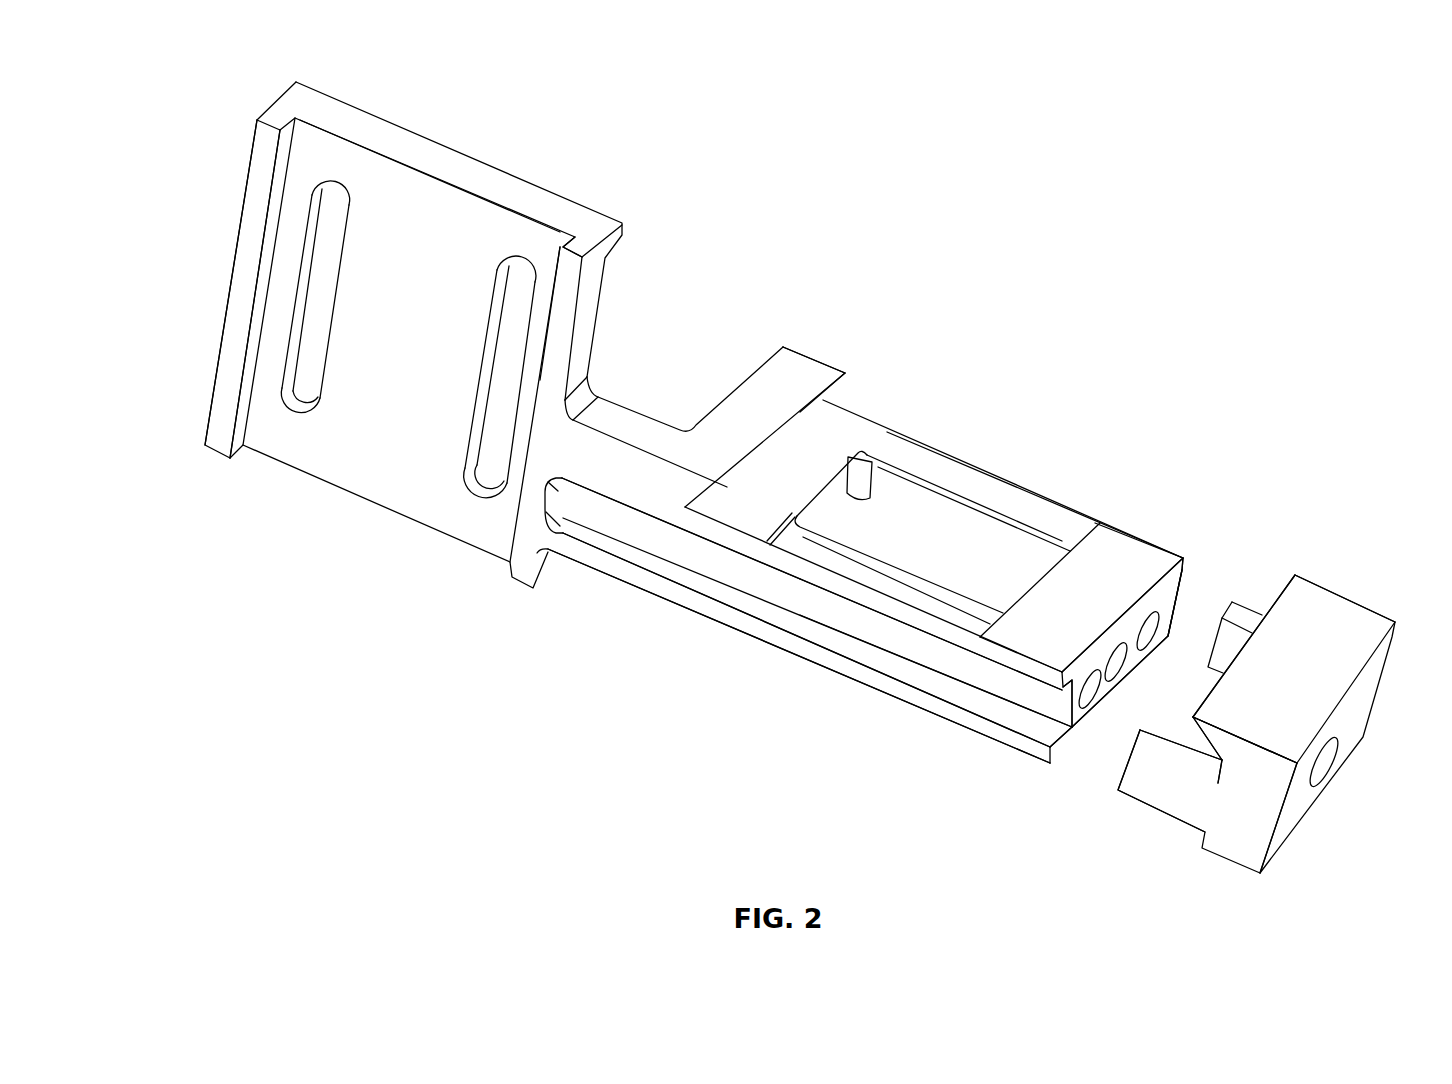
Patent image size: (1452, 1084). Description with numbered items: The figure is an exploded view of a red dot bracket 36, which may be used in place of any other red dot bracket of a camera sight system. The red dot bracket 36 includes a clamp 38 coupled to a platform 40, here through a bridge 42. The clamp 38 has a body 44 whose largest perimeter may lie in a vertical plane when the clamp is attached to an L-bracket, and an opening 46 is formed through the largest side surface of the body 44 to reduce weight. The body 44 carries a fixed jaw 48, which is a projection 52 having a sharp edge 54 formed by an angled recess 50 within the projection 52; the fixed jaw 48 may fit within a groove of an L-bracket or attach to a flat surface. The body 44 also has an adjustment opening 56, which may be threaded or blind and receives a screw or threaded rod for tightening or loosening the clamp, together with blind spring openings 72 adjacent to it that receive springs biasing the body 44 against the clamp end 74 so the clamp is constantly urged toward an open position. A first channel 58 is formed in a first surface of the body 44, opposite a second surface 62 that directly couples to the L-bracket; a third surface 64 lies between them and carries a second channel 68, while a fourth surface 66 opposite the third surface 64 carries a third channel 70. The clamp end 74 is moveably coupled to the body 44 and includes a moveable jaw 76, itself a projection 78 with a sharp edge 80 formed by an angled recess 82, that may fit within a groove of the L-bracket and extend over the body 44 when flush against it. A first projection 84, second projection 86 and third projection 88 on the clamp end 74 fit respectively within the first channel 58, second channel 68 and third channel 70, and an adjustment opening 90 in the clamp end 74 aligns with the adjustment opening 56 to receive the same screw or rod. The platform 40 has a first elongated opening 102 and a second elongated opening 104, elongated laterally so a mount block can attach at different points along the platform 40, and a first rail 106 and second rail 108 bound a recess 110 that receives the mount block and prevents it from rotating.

The red dot bracket 36 is at (1033, 233).
The clamp 38 is at (1058, 520).
The platform 40 is at (448, 215).
The bridge 42 is at (625, 420).
The body 44 is at (1003, 495).
The opening 46 is at (898, 572).
The fixed jaw 48 is at (825, 377).
The angled recess 50 is at (715, 505).
The projection 52 is at (790, 360).
The sharp edge 54 is at (777, 428).
The adjustment opening 56 is at (1117, 655).
The first channel 58 is at (1100, 710).
The second surface 62 is at (1023, 610).
The third surface 64 is at (873, 678).
The fourth surface 66 is at (1142, 533).
The second channel 68 is at (982, 677).
The third channel 70 is at (1168, 592).
The spring openings 72 is at (1148, 633).
The clamp end 74 is at (1373, 633).
The moveable jaw 76 is at (1315, 597).
The projection 78 is at (1233, 723).
The sharp edge 80 is at (1285, 590).
The angled recess 82 is at (1203, 763).
The first projection 84 is at (1177, 710).
The second projection 86 is at (1130, 787).
The third projection 88 is at (1245, 612).
The adjustment opening 90 is at (1340, 770).
The first elongated opening 102 is at (323, 262).
The second elongated opening 104 is at (517, 327).
The first rail 106 is at (228, 297).
The second rail 108 is at (565, 267).
The recess 110 is at (367, 190).